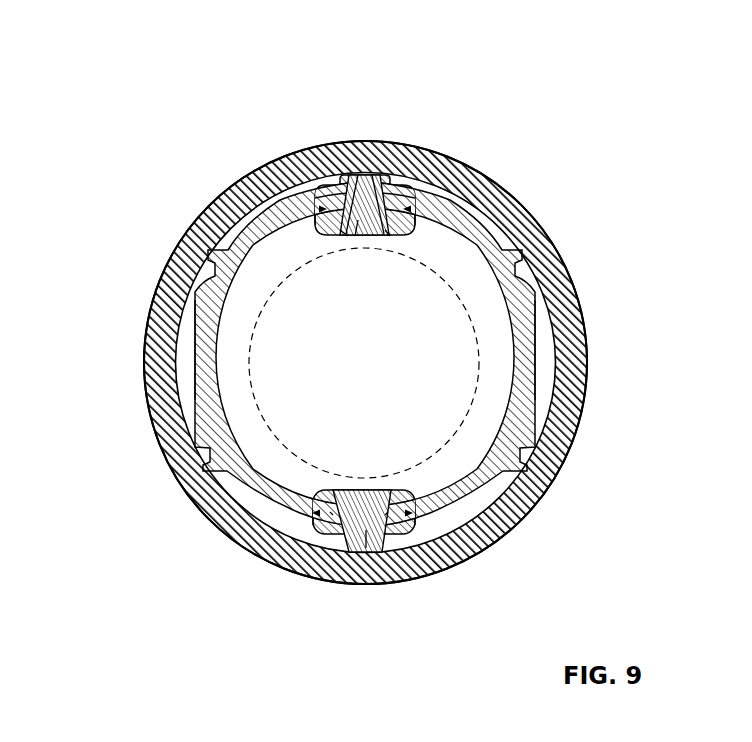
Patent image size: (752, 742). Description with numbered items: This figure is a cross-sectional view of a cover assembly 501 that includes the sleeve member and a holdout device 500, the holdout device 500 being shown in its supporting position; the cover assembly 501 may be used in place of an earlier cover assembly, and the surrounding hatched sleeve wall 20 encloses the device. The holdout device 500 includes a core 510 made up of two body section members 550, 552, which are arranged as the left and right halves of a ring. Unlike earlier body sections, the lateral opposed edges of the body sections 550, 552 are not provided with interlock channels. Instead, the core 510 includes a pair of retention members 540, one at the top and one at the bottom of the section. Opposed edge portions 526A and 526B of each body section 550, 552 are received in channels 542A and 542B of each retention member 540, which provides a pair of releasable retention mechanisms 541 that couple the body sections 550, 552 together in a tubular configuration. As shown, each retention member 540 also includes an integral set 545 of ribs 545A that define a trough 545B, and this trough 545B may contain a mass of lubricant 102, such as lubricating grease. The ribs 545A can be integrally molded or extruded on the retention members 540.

The cover assembly 501 is at (150, 30).
The holdout device 500 is at (238, 486).
The housing 20 is at (162, 362).
The core 510 is at (200, 407).
The body section member 550 is at (195, 343).
The body section member 552 is at (522, 330).
The releasable retention mechanism 541 is at (366, 250).
The channel 542A is at (328, 192).
The channel 542B is at (405, 192).
The retention member 540 is at (393, 237).
The integral set of ribs 545 is at (353, 148).
The rib 545A is at (343, 178).
The trough 545B is at (379, 147).
The lubricant 102 is at (356, 236).
The edge portion 526A is at (344, 236).
The edge portion 526B is at (386, 234).